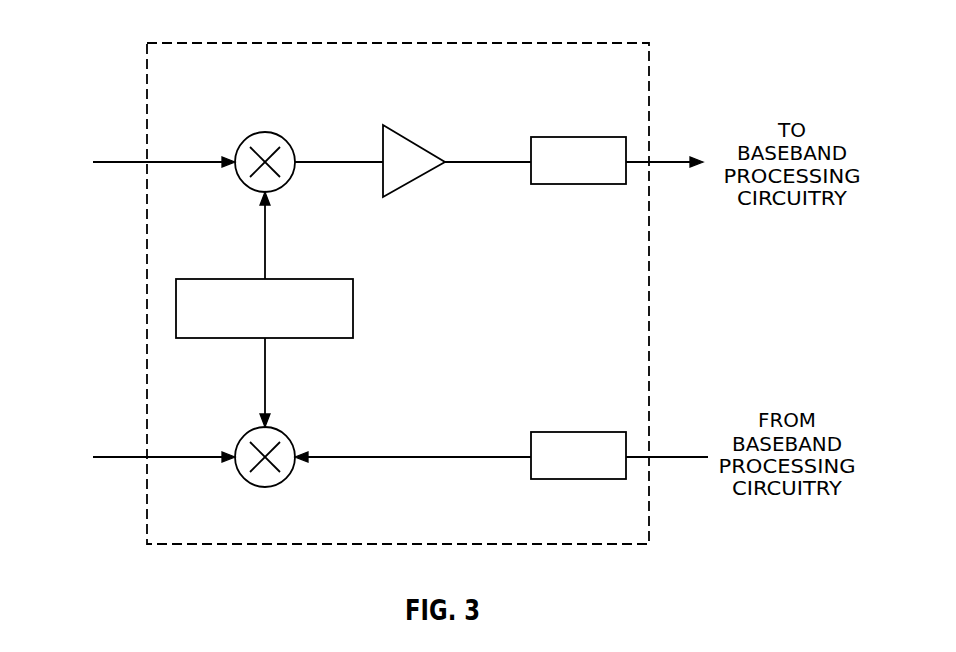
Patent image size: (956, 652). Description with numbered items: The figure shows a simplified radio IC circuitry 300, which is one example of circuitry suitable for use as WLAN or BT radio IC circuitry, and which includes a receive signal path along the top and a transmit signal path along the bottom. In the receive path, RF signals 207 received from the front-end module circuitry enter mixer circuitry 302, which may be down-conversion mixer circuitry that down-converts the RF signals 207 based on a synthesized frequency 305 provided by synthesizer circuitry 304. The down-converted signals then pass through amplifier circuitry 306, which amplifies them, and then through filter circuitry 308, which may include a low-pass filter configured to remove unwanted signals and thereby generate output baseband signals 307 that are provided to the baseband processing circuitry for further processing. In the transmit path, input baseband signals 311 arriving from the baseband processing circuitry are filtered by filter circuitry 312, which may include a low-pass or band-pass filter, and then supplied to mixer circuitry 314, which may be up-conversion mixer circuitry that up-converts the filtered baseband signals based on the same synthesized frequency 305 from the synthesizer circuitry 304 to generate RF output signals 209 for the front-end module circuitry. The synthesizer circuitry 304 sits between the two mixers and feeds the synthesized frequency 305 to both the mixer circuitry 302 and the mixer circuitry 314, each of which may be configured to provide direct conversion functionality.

The radio IC circuitry 300 is at (397, 43).
The RF signals 207 is at (115, 160).
The mixer circuitry 302 is at (249, 134).
The amplifier circuitry 306 is at (426, 149).
The filter circuitry 308 is at (587, 136).
The output baseband signals 307 is at (677, 160).
The synthesizer circuitry 304 is at (354, 304).
The synthesized frequency 305 is at (266, 242).
The RF output signals 209 is at (115, 456).
The mixer circuitry 314 is at (263, 487).
The filter circuitry 312 is at (587, 432).
The input baseband signals 311 is at (677, 456).